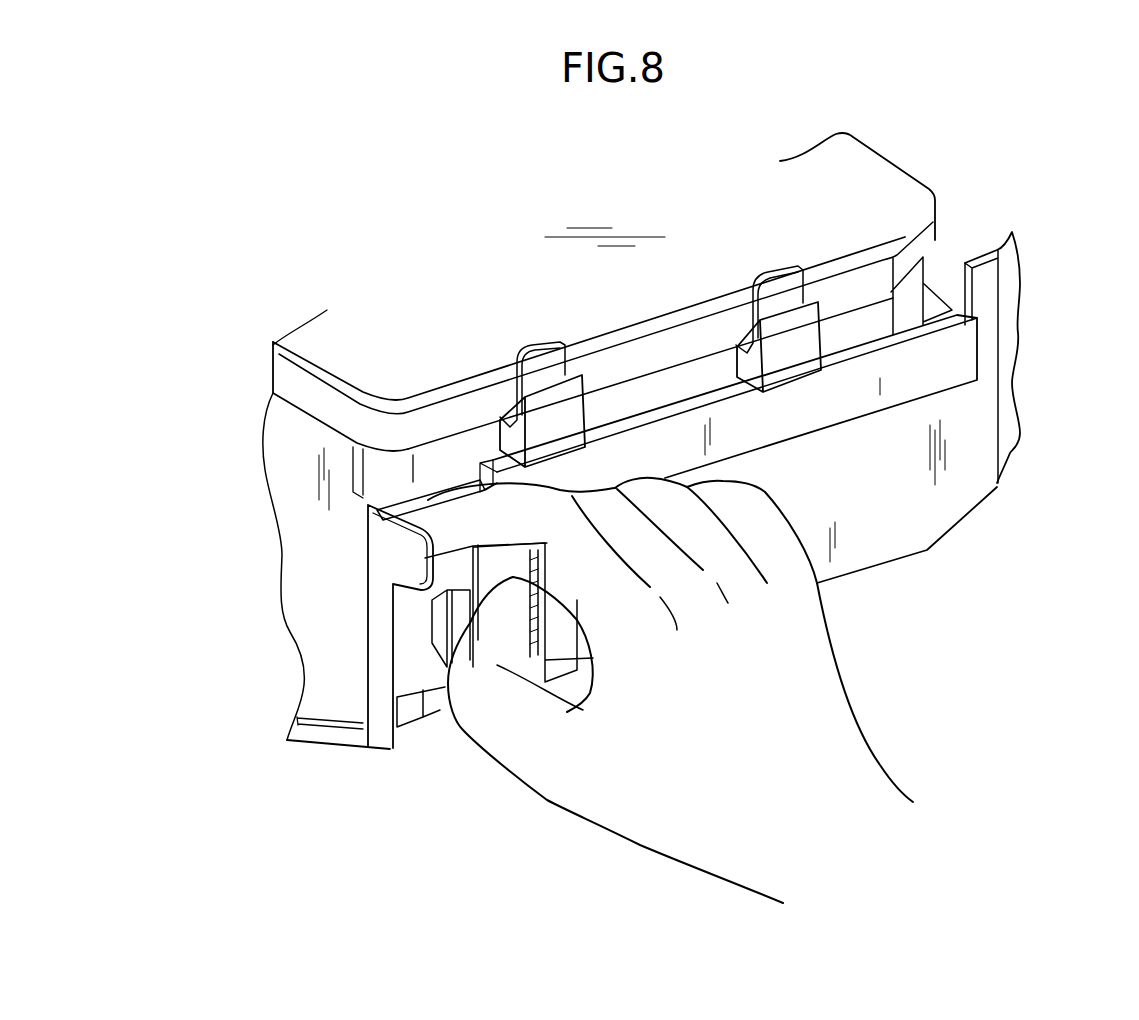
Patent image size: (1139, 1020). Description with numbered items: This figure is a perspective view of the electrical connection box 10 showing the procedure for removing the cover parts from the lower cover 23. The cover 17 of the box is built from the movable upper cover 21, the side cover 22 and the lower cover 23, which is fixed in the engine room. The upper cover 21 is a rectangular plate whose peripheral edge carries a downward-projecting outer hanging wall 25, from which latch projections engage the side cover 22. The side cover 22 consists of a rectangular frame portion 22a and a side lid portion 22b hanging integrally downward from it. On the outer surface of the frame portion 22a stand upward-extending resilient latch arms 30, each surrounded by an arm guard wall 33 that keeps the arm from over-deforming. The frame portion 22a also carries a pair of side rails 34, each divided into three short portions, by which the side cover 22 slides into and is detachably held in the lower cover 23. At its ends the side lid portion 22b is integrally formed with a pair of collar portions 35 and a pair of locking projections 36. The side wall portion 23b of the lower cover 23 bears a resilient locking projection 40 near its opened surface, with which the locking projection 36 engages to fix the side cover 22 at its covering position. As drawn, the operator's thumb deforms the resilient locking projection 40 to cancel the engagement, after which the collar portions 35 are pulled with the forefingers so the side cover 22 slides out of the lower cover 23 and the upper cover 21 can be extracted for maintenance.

The electrical connection box 10 is at (394, 203).
The cover 17 is at (296, 327).
The upper cover 21 is at (870, 170).
The side cover 22 is at (260, 458).
The frame portion 22a is at (849, 330).
The side lid portion 22b is at (333, 683).
The lower cover 23 is at (1005, 368).
The side wall portion 23b is at (969, 439).
The outer hanging wall 25 is at (928, 229).
The resilient latch arm 30 is at (545, 358).
The arm guard wall 33 is at (512, 414).
The side rail 34 is at (428, 497).
The collar portion 35 is at (392, 553).
The locking projection 36 is at (437, 653).
The resilient locking projection 40 is at (547, 598).